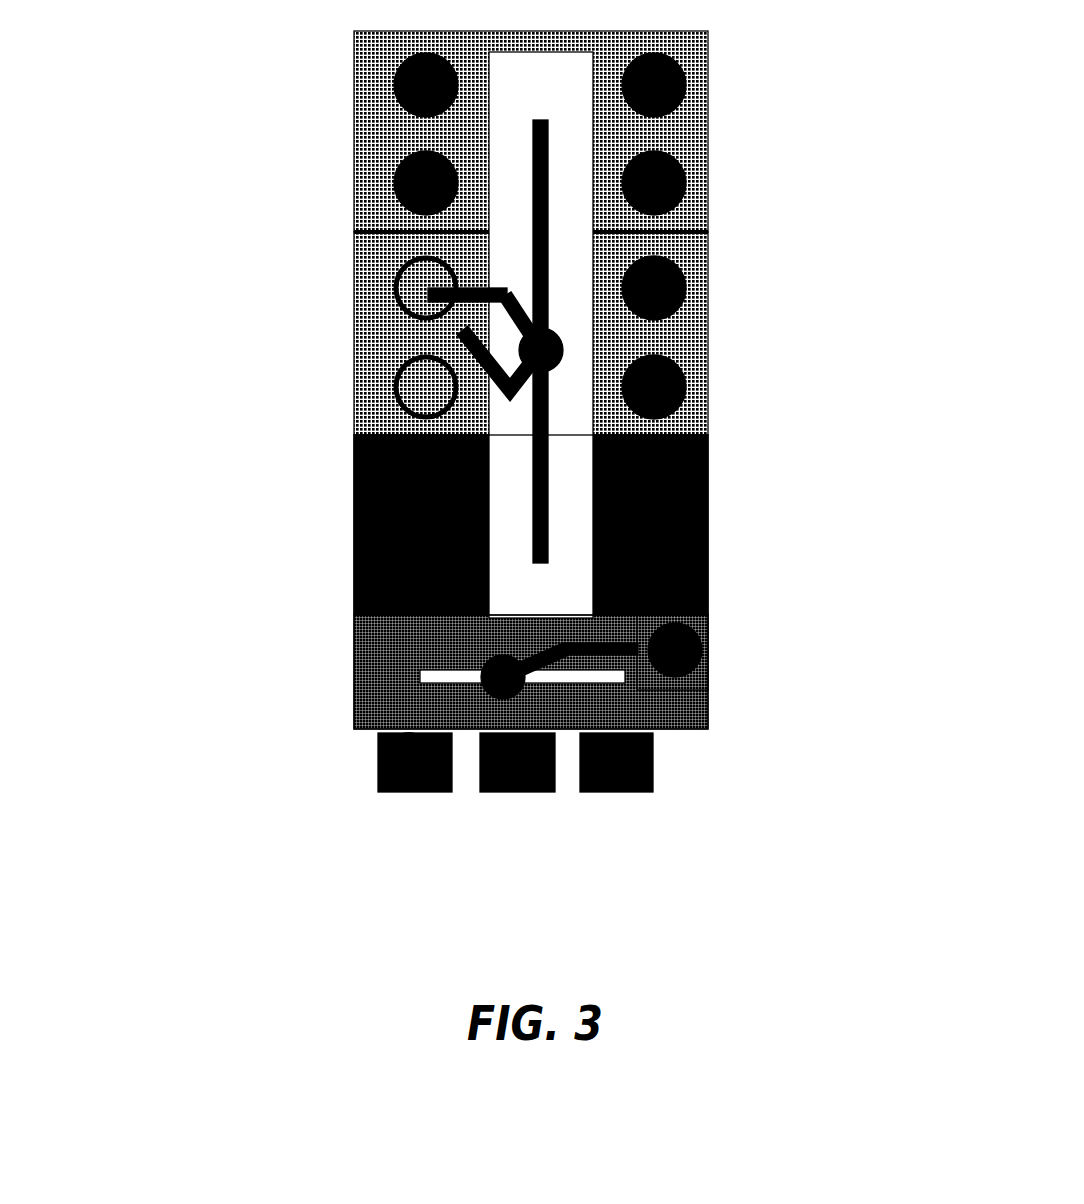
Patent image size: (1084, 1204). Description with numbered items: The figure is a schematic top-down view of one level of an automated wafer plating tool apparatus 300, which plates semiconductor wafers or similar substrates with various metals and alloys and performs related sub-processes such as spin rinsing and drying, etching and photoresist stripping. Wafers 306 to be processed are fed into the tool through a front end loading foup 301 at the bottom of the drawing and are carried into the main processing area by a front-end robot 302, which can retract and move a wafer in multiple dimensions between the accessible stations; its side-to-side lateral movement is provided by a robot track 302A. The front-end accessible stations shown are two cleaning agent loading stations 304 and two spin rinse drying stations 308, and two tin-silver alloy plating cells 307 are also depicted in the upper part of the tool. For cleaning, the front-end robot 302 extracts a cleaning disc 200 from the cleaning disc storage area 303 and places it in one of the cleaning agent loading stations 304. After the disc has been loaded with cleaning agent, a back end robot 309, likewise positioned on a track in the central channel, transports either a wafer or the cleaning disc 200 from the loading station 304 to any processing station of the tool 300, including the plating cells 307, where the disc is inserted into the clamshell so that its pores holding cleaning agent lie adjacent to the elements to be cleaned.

The automated wafer plating tool apparatus 300 is at (293, 65).
The front end loading foup 301 is at (607, 797).
The front-end robot 302 is at (457, 657).
The robot track 302A is at (412, 673).
The cleaning disc storage area 303 is at (727, 642).
The cleaning agent loading stations 304 is at (383, 498).
The wafers 306 is at (418, 292).
The tin-silver alloy plating cells 307 is at (690, 383).
The spin rinse drying stations 308 is at (686, 575).
The back end robot 309 is at (552, 337).
The cleaning disc 200 is at (422, 493).